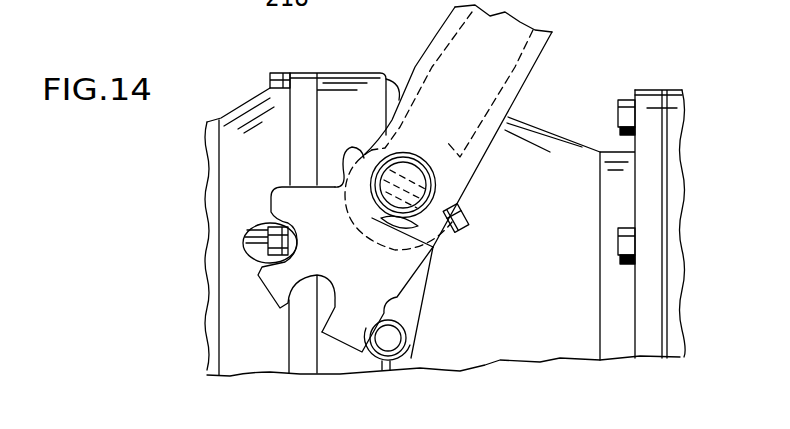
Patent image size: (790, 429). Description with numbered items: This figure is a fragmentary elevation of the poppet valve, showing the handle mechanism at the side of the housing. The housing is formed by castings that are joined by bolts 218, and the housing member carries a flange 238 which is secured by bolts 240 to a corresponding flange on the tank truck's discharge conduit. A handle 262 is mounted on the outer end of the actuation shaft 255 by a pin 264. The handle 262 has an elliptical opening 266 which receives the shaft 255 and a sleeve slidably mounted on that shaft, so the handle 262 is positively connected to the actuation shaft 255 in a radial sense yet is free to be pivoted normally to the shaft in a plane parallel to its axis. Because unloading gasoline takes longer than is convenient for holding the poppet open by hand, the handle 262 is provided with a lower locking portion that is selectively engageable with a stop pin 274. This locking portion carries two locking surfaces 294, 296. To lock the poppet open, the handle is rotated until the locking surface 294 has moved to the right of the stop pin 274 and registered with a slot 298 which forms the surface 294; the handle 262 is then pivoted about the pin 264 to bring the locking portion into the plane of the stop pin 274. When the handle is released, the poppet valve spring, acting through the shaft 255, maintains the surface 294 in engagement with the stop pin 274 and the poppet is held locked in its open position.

The bolt 218 is at (270, 80).
The flange 238 is at (648, 90).
The bolt 240 is at (618, 113).
The actuation shaft 255 is at (407, 167).
The handle 262 is at (435, 36).
The pin 264 is at (460, 210).
The elliptical opening 266 is at (433, 247).
The stop pin 274 is at (396, 332).
The locking surface 294 is at (324, 303).
The locking surface 296 is at (267, 265).
The slot 298 is at (330, 290).